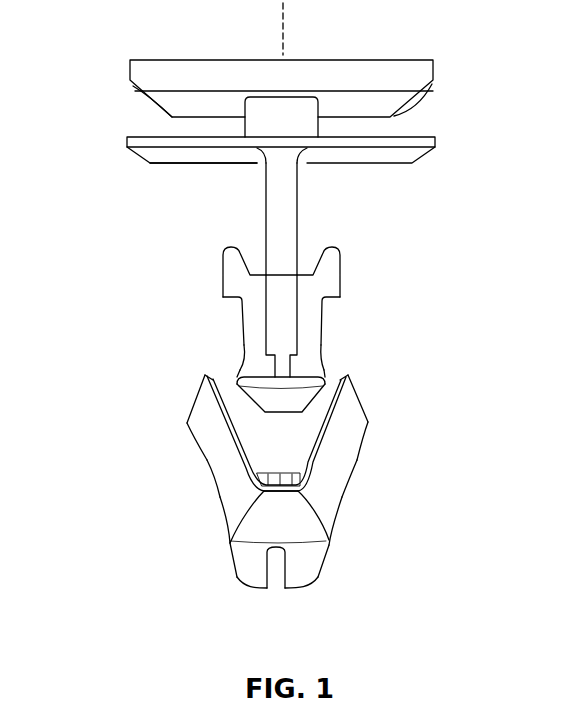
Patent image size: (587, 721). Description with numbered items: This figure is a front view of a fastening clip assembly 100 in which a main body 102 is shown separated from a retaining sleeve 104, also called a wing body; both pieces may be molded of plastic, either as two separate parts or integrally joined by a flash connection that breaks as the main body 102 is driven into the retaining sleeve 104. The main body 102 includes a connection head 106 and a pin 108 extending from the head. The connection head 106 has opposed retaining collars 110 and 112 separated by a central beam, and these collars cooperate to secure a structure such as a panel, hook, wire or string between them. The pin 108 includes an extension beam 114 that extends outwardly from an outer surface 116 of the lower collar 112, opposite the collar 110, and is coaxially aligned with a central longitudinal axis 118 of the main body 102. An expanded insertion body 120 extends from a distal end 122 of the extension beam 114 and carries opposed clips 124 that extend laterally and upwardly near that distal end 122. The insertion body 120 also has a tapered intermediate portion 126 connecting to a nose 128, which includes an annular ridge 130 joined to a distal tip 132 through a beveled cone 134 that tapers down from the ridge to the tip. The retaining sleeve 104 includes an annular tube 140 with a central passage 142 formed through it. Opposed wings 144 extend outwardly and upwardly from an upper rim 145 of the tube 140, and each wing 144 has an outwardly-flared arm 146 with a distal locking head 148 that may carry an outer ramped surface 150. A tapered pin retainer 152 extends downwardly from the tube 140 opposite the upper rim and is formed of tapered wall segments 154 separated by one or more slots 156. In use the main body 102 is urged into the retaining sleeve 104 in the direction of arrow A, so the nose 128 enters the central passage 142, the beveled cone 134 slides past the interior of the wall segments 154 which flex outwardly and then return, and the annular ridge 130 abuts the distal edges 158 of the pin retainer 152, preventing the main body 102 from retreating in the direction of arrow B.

The fastening clip assembly 100 is at (203, 717).
The main body 102 is at (355, 243).
The retaining sleeve 104 is at (349, 490).
The connection head 106 is at (500, 55).
The pin 108 is at (323, 313).
The retaining collar 110 is at (406, 59).
The retaining collar 112 is at (436, 143).
The extension beam 114 is at (272, 103).
The outer surface 116 is at (192, 152).
The central longitudinal axis 118 is at (284, 18).
The insertion body 120 is at (321, 338).
The distal end 122 is at (303, 272).
The clips 124 is at (225, 277).
The tapered intermediate portion 126 is at (242, 347).
The nose 128 is at (282, 412).
The annular ridge 130 is at (243, 370).
The distal tip 132 is at (306, 484).
The beveled cone 134 is at (350, 378).
The annular tube 140 is at (228, 521).
The central passage 142 is at (230, 543).
The wings 144 is at (192, 440).
The upper rim 145 is at (331, 519).
The outwardly-flared arm 146 is at (216, 478).
The distal locking head 148 is at (187, 423).
The outer ramped surface 150 is at (199, 397).
The tapered pin retainer 152 is at (316, 579).
The tapered wall segments 154 is at (234, 574).
The slots 156 is at (277, 588).
The distal edges 158 is at (293, 590).